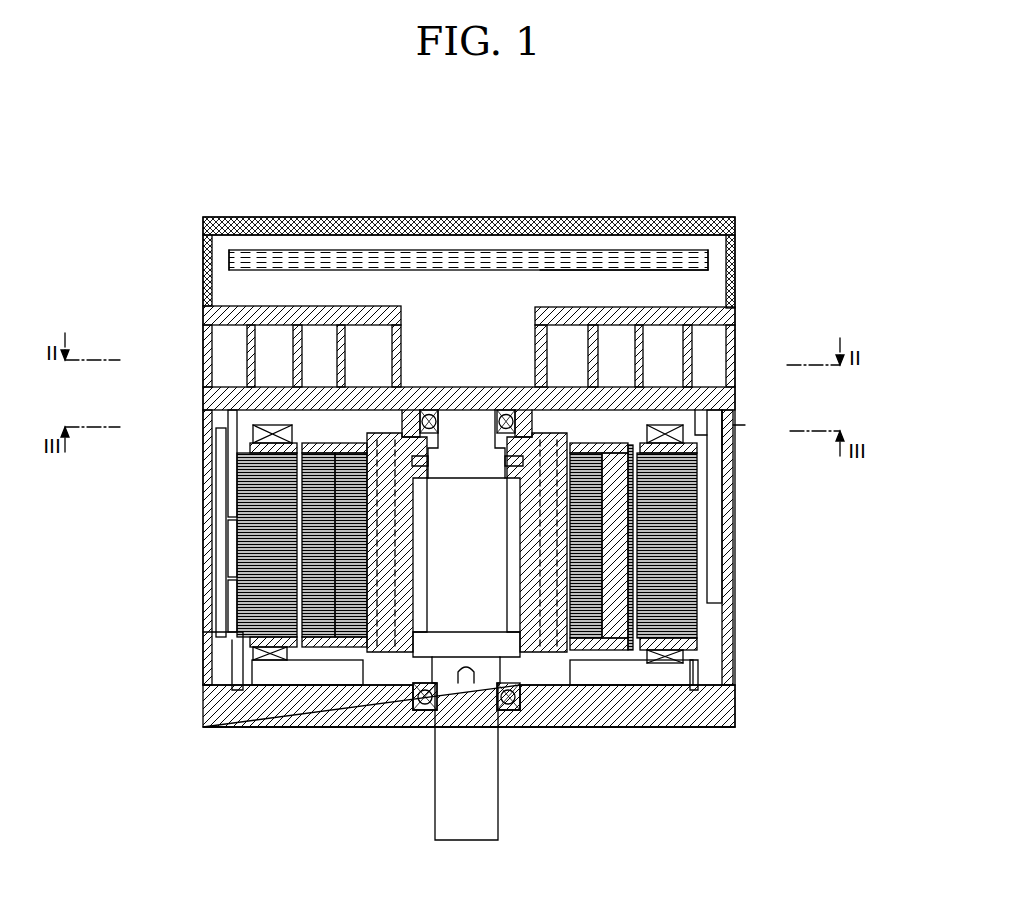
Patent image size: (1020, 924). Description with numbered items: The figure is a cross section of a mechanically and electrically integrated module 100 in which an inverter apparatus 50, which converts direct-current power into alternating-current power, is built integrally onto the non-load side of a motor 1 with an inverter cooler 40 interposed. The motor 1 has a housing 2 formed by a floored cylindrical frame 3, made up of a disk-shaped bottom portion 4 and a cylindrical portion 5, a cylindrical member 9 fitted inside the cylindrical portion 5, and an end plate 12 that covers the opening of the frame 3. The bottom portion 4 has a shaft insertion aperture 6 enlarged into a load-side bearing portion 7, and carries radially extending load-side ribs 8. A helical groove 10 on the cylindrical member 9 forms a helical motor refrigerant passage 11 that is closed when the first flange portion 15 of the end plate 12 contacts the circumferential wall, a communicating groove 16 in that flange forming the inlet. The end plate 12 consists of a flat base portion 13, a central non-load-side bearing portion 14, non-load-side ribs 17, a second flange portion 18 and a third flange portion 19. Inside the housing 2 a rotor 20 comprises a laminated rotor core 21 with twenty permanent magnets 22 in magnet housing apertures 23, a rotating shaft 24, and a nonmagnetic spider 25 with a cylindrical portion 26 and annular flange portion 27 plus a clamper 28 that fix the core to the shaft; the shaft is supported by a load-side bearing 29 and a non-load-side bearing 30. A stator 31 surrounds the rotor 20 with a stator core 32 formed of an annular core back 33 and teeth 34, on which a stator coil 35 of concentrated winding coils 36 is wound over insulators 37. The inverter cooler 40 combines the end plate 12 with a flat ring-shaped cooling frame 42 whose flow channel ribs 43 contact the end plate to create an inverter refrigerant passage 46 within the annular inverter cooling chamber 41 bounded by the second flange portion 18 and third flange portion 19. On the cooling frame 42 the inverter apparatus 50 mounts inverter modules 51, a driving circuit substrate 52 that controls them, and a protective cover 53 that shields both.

The mechanically and electrically integrated module 100 is at (182, 124).
The motor 1 is at (133, 840).
The housing 2 is at (768, 547).
The frame 3 is at (735, 529).
The bottom portion 4 is at (285, 700).
The cylindrical portion 5 is at (209, 586).
The shaft insertion aperture 6 is at (428, 708).
The load-side bearing portion 7 is at (381, 642).
The load-side ribs 8 is at (275, 692).
The cylindrical member 9 is at (722, 498).
The helical groove 10 is at (226, 541).
The motor refrigerant passage 11 is at (218, 487).
The end plate 12 is at (760, 447).
The base portion 13 is at (473, 388).
The non-load-side bearing portion 14 is at (417, 412).
The first flange portion 15 is at (733, 410).
The communicating groove 16 is at (735, 428).
The non-load-side ribs 17 is at (619, 388).
The second flange portion 18 is at (216, 386).
The third flange portion 19 is at (372, 335).
The rotor 20 is at (558, 662).
The rotor core 21 is at (576, 650).
The permanent magnets 22 is at (640, 652).
The magnet housing apertures 23 is at (606, 650).
The rotating shaft 24 is at (452, 795).
The spider 25 is at (329, 640).
The cylindrical portion 26 is at (345, 660).
The annular flange portion 27 is at (325, 660).
The clamper 28 is at (290, 440).
The load-side bearing 29 is at (508, 710).
The non-load-side bearing 30 is at (436, 412).
The stator 31 is at (845, 563).
The stator core 32 is at (739, 546).
The core back 33 is at (697, 572).
The teeth 34 is at (690, 600).
The stator coil 35 is at (683, 660).
The concentrated winding coils 36 is at (255, 656).
The insulators 37 is at (224, 643).
The inverter cooler 40 is at (456, 280).
The inverter cooling chamber 41 is at (720, 345).
The cooling frame 42 is at (270, 316).
The flow channel ribs 43 is at (301, 360).
The inverter refrigerant passage 46 is at (735, 282).
The inverter apparatus 50 is at (133, 220).
The inverter modules 51 is at (665, 288).
The driving circuit substrate 52 is at (537, 262).
The protective cover 53 is at (587, 290).